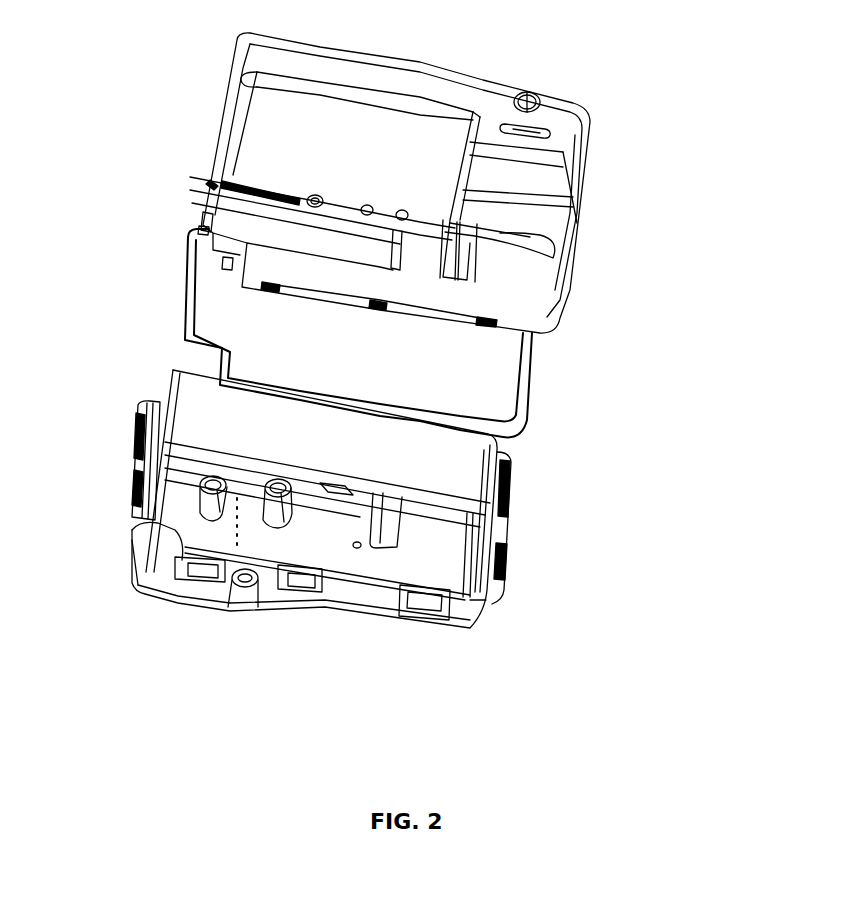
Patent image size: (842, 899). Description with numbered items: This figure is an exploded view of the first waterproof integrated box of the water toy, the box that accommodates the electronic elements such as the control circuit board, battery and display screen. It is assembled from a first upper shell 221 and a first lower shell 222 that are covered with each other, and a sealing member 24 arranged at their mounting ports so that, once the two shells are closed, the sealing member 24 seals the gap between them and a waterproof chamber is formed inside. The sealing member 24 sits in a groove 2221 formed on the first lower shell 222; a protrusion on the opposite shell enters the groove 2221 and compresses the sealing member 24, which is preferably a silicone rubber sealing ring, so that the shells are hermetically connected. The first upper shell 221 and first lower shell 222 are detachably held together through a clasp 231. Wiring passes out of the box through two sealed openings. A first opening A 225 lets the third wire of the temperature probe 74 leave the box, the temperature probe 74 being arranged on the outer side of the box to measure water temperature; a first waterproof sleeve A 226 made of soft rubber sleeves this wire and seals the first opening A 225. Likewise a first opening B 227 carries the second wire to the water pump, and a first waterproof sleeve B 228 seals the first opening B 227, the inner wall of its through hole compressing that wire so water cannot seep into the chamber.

The first upper shell 221 is at (590, 210).
The first lower shell 222 is at (507, 527).
The groove 2221 is at (140, 512).
The first opening A 225 is at (285, 200).
The first waterproof sleeve A 226 is at (200, 493).
The first opening B 227 is at (300, 195).
The first waterproof sleeve B 228 is at (285, 505).
The clasp 231 is at (178, 568).
The sealing member 24 is at (182, 337).
The temperature probe 74 is at (212, 184).